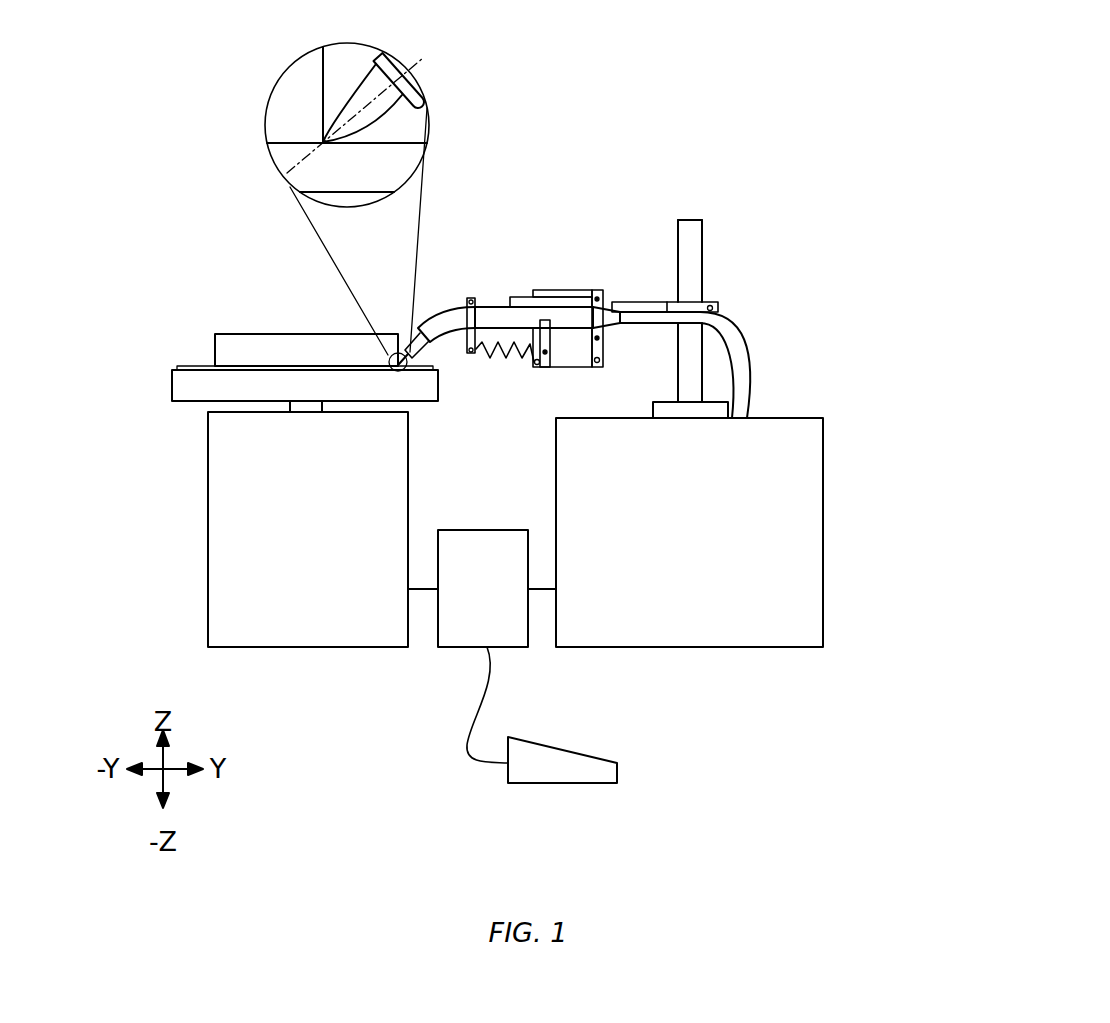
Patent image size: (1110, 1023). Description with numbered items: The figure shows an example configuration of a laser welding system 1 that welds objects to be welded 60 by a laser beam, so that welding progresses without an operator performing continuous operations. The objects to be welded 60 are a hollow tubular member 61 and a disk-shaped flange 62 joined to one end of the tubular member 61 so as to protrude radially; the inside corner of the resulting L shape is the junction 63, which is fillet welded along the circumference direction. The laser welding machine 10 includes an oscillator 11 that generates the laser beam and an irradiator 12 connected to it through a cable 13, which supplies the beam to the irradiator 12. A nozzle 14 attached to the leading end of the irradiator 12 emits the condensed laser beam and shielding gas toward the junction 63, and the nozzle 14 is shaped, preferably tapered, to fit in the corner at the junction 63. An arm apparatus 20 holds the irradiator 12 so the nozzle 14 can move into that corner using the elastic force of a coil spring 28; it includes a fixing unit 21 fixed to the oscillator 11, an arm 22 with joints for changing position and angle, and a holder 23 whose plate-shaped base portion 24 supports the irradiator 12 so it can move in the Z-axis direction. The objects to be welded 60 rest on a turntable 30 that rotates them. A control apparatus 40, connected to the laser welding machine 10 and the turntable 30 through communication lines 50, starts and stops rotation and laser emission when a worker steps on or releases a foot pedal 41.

The laser welding system 1 is at (760, 167).
The laser welding machine 10 is at (746, 527).
The oscillator 11 is at (793, 575).
The irradiator 12 is at (493, 300).
The cable 13 is at (747, 352).
The nozzle 14 is at (405, 102).
The arm apparatus 20 is at (723, 314).
The fixing unit 21 is at (731, 375).
The arm 22 is at (638, 302).
The holder 23 is at (511, 308).
The base portion 24 is at (560, 365).
The coil spring 28 is at (493, 362).
The turntable 30 is at (232, 560).
The control apparatus 40 is at (453, 647).
The foot pedal 41 is at (585, 772).
The communication lines 50 is at (425, 589).
The objects to be welded 60 is at (263, 338).
The tubular member 61 is at (292, 85).
The flange 62 is at (315, 178).
The junction 63 is at (325, 135).